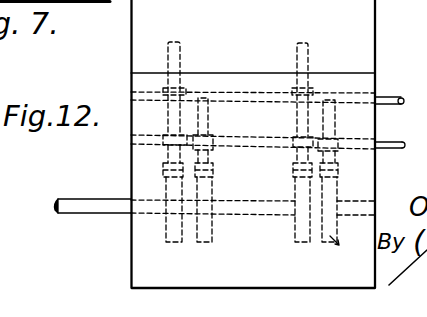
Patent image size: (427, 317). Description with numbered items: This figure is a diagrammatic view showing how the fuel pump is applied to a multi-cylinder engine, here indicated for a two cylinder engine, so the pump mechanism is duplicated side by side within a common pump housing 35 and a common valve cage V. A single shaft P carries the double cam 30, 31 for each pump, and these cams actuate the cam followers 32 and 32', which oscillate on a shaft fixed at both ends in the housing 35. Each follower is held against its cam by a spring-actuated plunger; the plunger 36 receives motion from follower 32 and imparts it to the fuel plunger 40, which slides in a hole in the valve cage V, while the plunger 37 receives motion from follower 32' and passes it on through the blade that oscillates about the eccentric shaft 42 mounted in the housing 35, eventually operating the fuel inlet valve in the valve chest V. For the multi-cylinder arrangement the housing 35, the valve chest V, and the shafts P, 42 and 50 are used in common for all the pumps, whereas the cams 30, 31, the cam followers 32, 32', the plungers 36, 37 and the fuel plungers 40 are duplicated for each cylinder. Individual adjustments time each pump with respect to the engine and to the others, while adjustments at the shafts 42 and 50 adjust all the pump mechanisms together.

The valve cage V is at (254, 144).
The shaft P is at (67, 203).
The cam 30 is at (173, 187).
The cam 31 is at (210, 188).
The cam follower 32 is at (224, 172).
The cam follower 32' is at (280, 171).
The pump housing 35 is at (365, 88).
The spring-actuated plunger 36 is at (168, 148).
The spring-actuated plunger 37 is at (206, 113).
The fuel plunger 40 is at (182, 54).
The eccentric shaft 42 is at (396, 141).
The shaft 50 is at (393, 98).